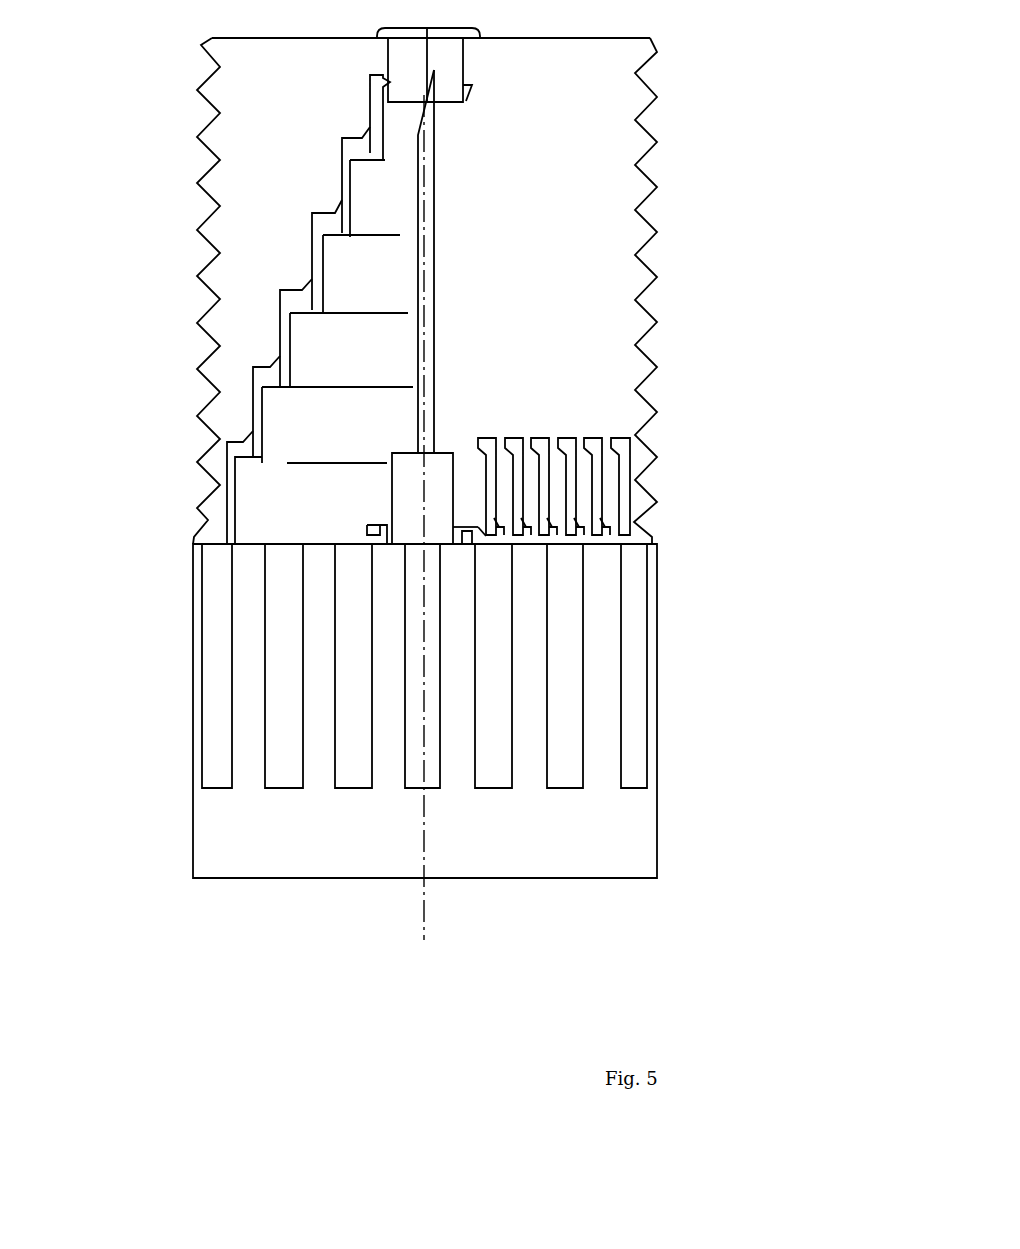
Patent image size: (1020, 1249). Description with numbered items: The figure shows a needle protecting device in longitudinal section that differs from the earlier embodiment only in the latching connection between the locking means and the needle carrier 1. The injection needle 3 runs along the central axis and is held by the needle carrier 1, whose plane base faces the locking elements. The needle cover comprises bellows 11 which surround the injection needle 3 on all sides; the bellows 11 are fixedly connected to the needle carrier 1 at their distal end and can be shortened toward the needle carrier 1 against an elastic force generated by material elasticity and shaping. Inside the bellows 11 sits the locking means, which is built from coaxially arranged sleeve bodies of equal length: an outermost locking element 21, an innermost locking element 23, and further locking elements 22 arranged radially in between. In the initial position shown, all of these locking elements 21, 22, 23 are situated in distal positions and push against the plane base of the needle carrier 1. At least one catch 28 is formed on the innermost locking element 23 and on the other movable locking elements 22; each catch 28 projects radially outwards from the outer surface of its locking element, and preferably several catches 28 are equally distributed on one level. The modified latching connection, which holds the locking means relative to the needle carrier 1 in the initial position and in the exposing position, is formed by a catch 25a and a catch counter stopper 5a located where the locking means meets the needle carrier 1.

The needle carrier 1 is at (598, 633).
The injection needle 3 is at (432, 245).
The catch counter stopper 5a is at (472, 540).
The bellows 11 is at (650, 358).
The outermost locking element 21 is at (368, 524).
The locking element 22 is at (287, 342).
The innermost locking element 23 is at (372, 107).
The catch 25a is at (483, 540).
The catch 28 is at (627, 520).